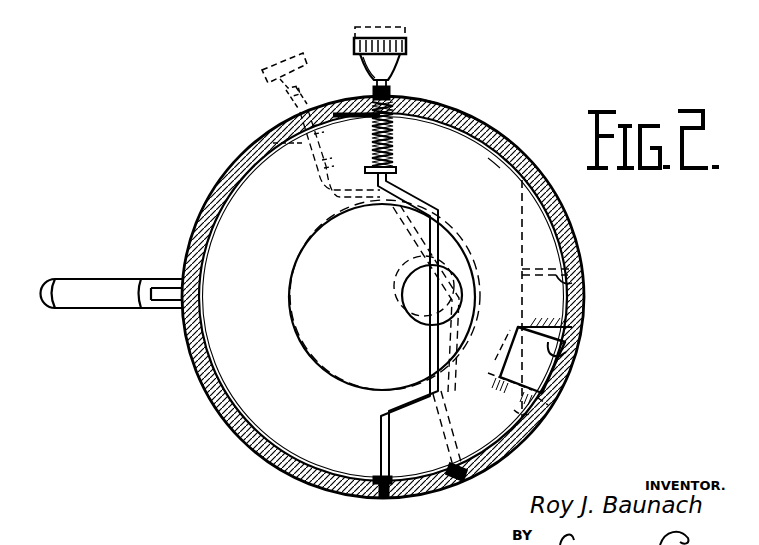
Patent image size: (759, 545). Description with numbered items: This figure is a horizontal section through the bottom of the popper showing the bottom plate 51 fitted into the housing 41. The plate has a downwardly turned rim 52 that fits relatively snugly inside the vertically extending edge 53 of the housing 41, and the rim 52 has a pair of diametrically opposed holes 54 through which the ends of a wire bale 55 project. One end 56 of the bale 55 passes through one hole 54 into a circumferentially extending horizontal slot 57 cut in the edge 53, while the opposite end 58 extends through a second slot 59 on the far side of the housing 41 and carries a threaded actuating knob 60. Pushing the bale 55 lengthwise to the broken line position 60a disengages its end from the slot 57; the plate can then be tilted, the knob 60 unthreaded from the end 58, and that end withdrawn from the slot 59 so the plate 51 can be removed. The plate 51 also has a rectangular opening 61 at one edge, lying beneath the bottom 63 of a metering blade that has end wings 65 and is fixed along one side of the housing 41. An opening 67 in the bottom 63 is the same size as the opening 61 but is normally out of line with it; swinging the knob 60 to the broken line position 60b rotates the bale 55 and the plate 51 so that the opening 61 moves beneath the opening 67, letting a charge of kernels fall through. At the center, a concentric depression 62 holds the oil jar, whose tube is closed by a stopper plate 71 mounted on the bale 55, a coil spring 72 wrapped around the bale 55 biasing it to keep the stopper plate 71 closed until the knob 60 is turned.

The housing 41 is at (596, 330).
The bottom plate 51 is at (490, 158).
The downwardly turned rim 52 is at (462, 118).
The vertically extending edge 53 is at (435, 102).
The holes 54 is at (392, 96).
The wire bale 55 is at (442, 447).
The end of bale 56 is at (392, 498).
The horizontal slot 57 is at (455, 481).
The opposite end of bale 58 is at (372, 90).
The second slot 59 is at (346, 110).
The actuating knob 60 is at (398, 64).
The knob broken-line position 60a is at (408, 28).
The knob swung position 60b is at (280, 86).
The rectangular opening 61 is at (562, 355).
The concentric depression 62 is at (472, 242).
The bottom of metering blade 63 is at (536, 406).
The end wings 65 is at (548, 268).
The opening in blade bottom 67 is at (576, 282).
The stopper plate 71 is at (462, 294).
The coil spring 72 is at (390, 140).